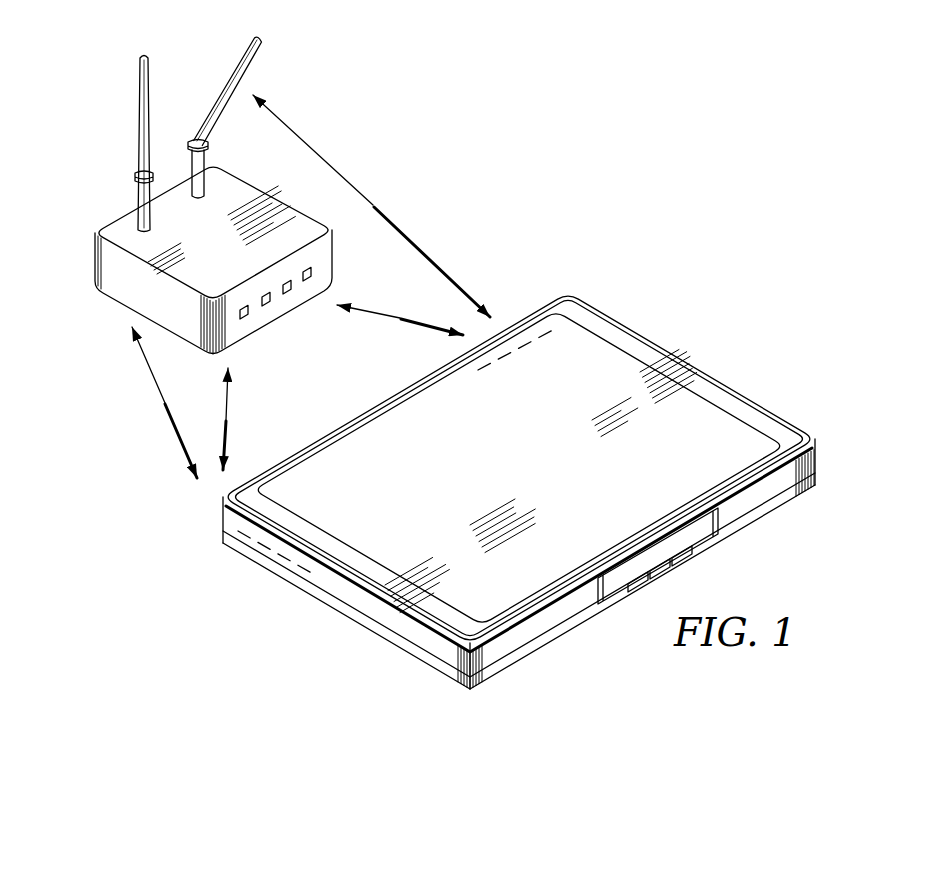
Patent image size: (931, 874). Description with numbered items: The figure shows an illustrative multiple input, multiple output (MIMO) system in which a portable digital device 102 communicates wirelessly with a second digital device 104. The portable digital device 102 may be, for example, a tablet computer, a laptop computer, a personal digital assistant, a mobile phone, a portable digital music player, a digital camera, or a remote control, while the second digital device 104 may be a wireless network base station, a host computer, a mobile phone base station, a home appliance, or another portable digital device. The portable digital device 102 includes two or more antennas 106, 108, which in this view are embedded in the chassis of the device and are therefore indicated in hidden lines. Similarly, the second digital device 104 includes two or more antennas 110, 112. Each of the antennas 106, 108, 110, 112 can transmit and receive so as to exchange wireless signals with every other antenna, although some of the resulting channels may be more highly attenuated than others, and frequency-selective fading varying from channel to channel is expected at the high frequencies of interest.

The portable digital device 102 is at (353, 615).
The second digital device 104 is at (262, 318).
The antenna 106 is at (264, 547).
The antenna 108 is at (507, 353).
The antenna 110 is at (138, 120).
The antenna 112 is at (237, 63).